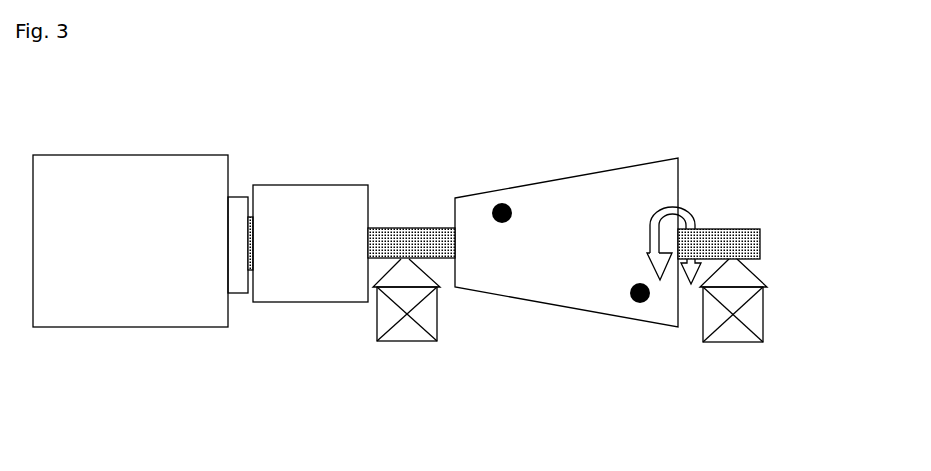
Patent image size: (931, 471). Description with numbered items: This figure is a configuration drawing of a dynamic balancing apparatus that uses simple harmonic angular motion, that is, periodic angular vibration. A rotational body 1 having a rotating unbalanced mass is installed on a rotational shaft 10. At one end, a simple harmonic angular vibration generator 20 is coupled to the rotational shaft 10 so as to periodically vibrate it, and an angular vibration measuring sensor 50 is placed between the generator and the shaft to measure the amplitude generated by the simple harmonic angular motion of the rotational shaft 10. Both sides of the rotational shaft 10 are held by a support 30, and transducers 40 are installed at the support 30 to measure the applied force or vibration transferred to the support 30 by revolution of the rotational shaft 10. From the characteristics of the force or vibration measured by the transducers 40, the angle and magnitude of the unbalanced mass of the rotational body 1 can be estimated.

The rotational body 1 is at (660, 175).
The rotational shaft 10 is at (727, 240).
The simple harmonic angular vibration generator 20 is at (128, 173).
The support 30 is at (422, 280).
The transducers 40 is at (399, 333).
The angular vibration measuring sensor 50 is at (317, 198).